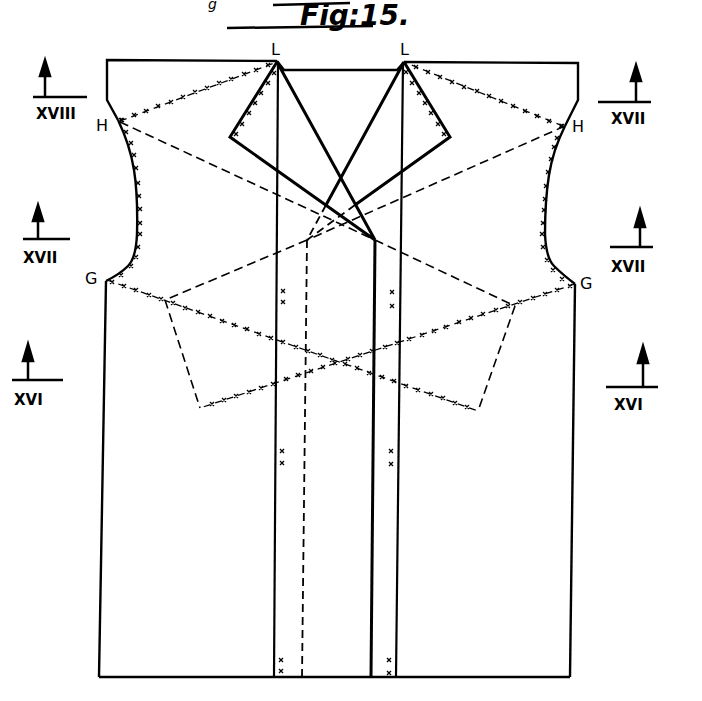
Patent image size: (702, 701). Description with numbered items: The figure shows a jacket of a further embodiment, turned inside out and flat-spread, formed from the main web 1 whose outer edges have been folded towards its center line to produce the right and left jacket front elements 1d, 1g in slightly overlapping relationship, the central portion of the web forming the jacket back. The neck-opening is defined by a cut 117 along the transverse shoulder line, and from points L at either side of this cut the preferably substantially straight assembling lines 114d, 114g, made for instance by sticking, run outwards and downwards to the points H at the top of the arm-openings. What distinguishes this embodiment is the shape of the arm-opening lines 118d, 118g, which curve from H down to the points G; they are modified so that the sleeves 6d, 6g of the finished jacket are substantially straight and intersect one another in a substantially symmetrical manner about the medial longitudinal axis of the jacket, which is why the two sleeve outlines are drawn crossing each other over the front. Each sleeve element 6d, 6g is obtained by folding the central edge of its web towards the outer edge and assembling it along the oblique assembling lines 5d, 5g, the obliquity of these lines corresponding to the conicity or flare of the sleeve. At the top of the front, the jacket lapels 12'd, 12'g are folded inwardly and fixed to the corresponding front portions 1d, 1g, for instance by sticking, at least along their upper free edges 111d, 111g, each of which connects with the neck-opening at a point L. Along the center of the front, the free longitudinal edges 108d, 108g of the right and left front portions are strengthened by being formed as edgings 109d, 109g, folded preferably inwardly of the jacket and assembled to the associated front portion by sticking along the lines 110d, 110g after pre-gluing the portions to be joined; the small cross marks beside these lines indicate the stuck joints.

The main web 1 is at (303, 78).
The left jacket front element 1g is at (120, 538).
The right jacket front element 1d is at (548, 567).
The left oblique assembling line 5g is at (440, 390).
The right oblique assembling line 5d is at (235, 394).
The left sleeve element 6g is at (489, 377).
The right sleeve element 6d is at (192, 386).
The left jacket lapel 12'g is at (282, 151).
The right jacket lapel 12'd is at (395, 151).
The left free longitudinal edge 108g is at (370, 624).
The right free longitudinal edge 108d is at (301, 598).
The left edging 109g is at (275, 558).
The right edging 109d is at (397, 548).
The left sticking line 110g is at (281, 460).
The right sticking line 110d is at (393, 466).
The left lapel upper free edge 111g is at (236, 117).
The right lapel upper free edge 111d is at (440, 120).
The left shoulder assembling line 114g is at (171, 100).
The right shoulder assembling line 114d is at (490, 98).
The neck-opening cut 117 is at (339, 69).
The left arm-opening line 118g is at (133, 193).
The right arm-opening line 118d is at (548, 210).